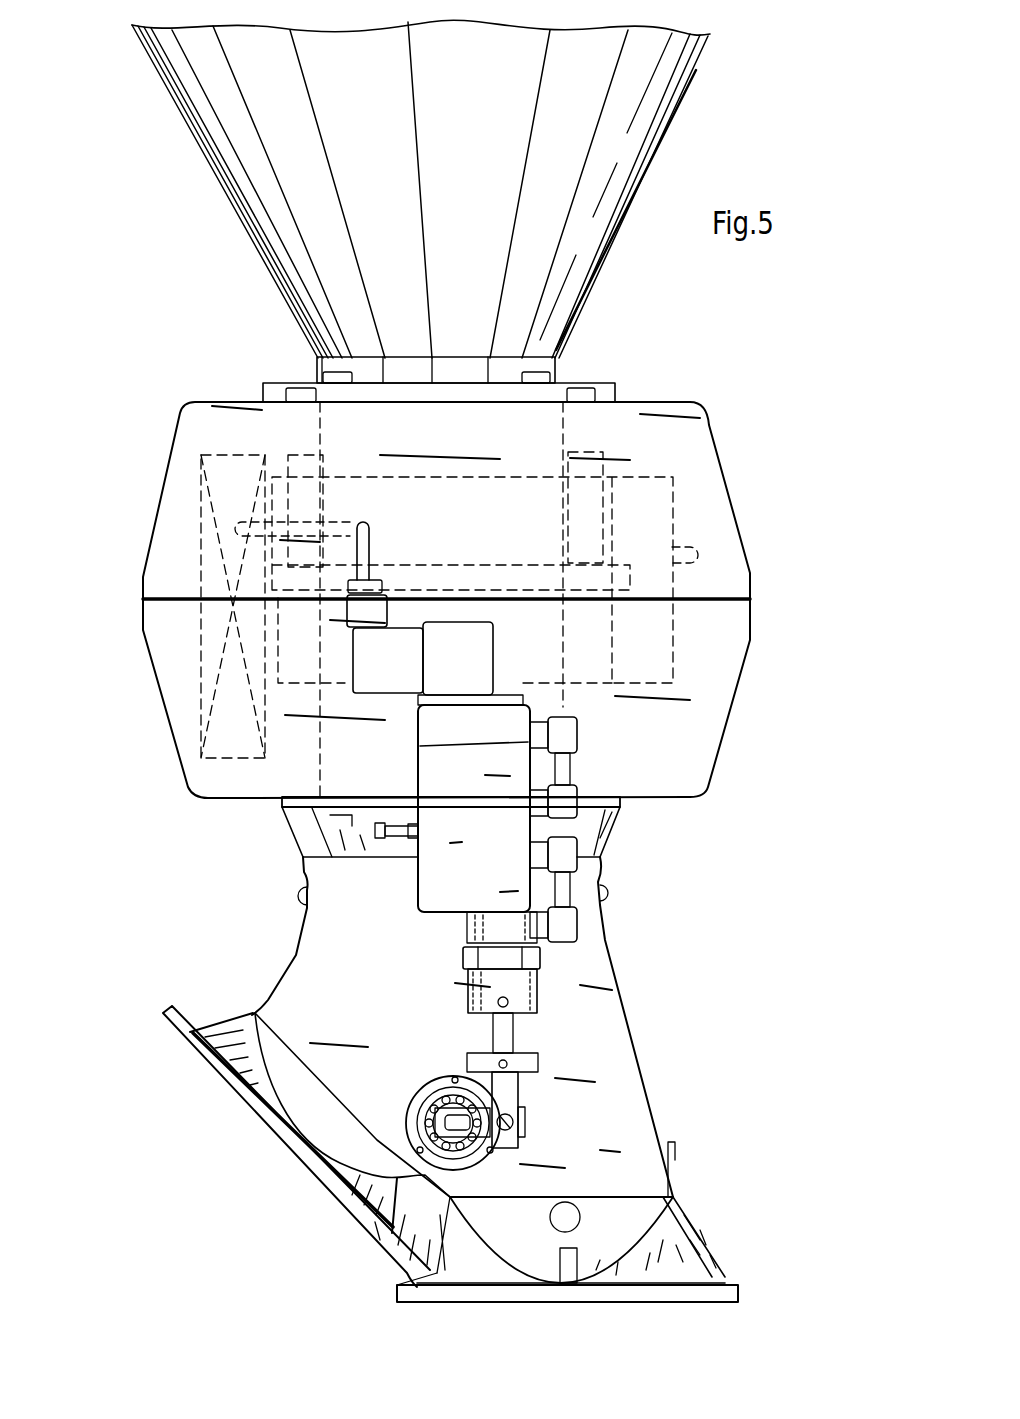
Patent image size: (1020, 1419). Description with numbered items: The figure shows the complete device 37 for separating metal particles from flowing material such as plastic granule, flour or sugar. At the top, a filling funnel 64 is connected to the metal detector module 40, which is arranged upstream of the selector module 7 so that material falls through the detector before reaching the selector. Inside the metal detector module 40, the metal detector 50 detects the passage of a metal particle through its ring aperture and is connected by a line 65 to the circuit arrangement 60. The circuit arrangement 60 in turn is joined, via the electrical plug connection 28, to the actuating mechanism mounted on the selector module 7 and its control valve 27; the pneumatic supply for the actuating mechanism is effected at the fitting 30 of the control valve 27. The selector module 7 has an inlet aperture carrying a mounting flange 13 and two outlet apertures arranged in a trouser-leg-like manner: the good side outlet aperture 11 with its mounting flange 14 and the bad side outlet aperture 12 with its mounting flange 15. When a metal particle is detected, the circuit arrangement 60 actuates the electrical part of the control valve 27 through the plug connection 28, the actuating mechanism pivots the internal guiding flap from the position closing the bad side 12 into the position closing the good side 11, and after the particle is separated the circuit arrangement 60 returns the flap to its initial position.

The device for separating metal particles 37 is at (138, 348).
The filling funnel 64 is at (658, 92).
The metal detector module 40 is at (728, 461).
The line 65 is at (700, 545).
The electrical plug connection 28 is at (482, 636).
The circuit arrangement 60 is at (233, 638).
The metal detector 50 is at (587, 625).
The control valve 27 is at (500, 818).
The fitting 30 is at (393, 842).
The mounting flange 13 is at (297, 838).
The selector module 7 is at (622, 1072).
The mounting flange 14 is at (228, 1075).
The outlet aperture 12 is at (277, 1157).
The mounting flange 15 is at (493, 1293).
The outlet aperture 11 is at (582, 1307).